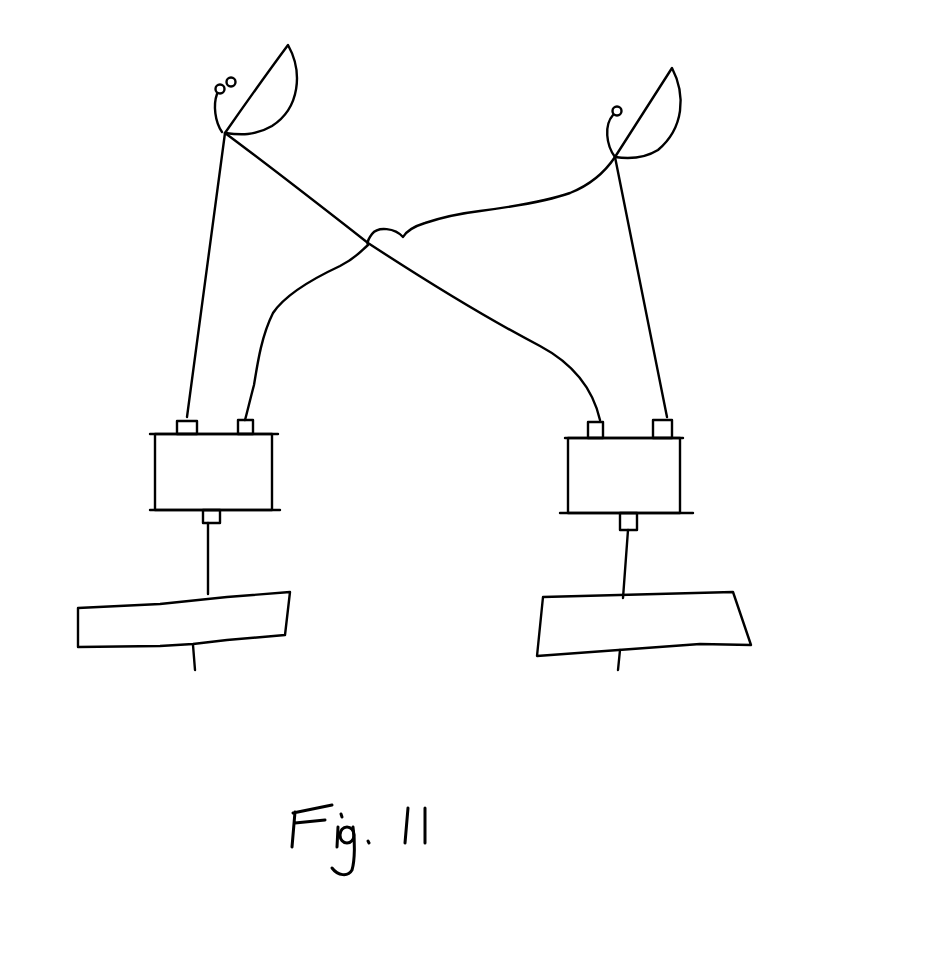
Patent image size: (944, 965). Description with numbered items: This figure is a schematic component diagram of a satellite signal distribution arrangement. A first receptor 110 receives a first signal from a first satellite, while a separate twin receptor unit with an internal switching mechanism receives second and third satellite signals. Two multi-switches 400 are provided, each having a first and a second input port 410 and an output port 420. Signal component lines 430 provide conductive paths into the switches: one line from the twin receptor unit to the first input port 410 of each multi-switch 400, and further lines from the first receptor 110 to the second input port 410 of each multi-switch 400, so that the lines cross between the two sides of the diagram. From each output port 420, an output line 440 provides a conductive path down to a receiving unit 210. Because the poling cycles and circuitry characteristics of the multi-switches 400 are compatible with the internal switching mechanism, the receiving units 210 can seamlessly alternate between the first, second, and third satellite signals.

The first receptor 110 is at (608, 110).
The receiving unit 210 is at (280, 615).
The multi-switch 400 is at (257, 460).
The input port 410 is at (175, 422).
The output port 420 is at (233, 512).
The signal component line 430 is at (208, 263).
The output line 440 is at (207, 550).